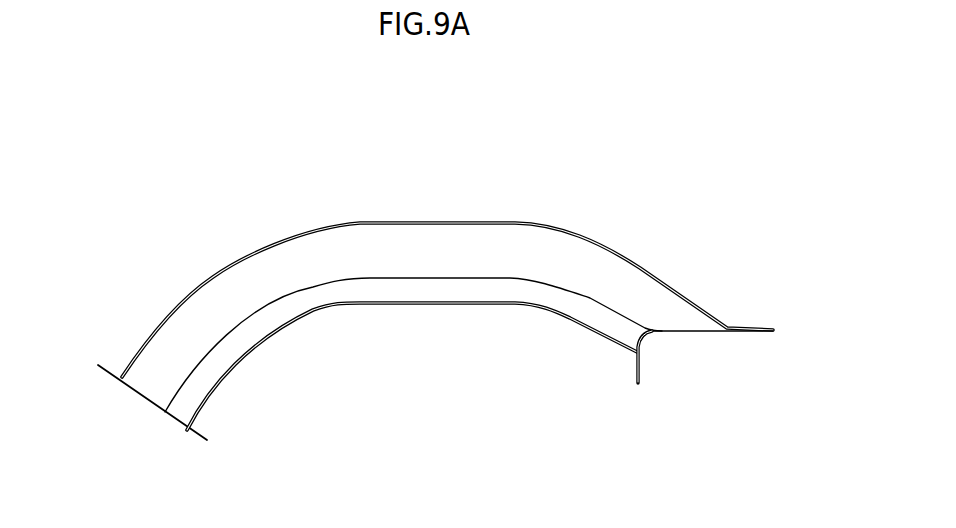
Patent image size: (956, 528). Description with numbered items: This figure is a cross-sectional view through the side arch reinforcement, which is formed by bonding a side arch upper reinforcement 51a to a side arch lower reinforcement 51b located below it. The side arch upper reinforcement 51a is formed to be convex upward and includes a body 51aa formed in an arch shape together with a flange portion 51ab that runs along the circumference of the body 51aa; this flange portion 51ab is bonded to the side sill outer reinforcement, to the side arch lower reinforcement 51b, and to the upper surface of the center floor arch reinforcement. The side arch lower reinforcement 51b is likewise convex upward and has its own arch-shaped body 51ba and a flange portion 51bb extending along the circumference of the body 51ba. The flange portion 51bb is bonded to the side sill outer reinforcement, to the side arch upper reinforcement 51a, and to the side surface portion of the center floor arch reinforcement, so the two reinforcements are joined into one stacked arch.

The side arch upper reinforcement 51a is at (447, 231).
The body 51aa is at (460, 220).
The flange portion 51ab is at (747, 328).
The side arch lower reinforcement 51b is at (419, 401).
The body 51ba is at (443, 305).
The flange portion 51bb is at (633, 363).